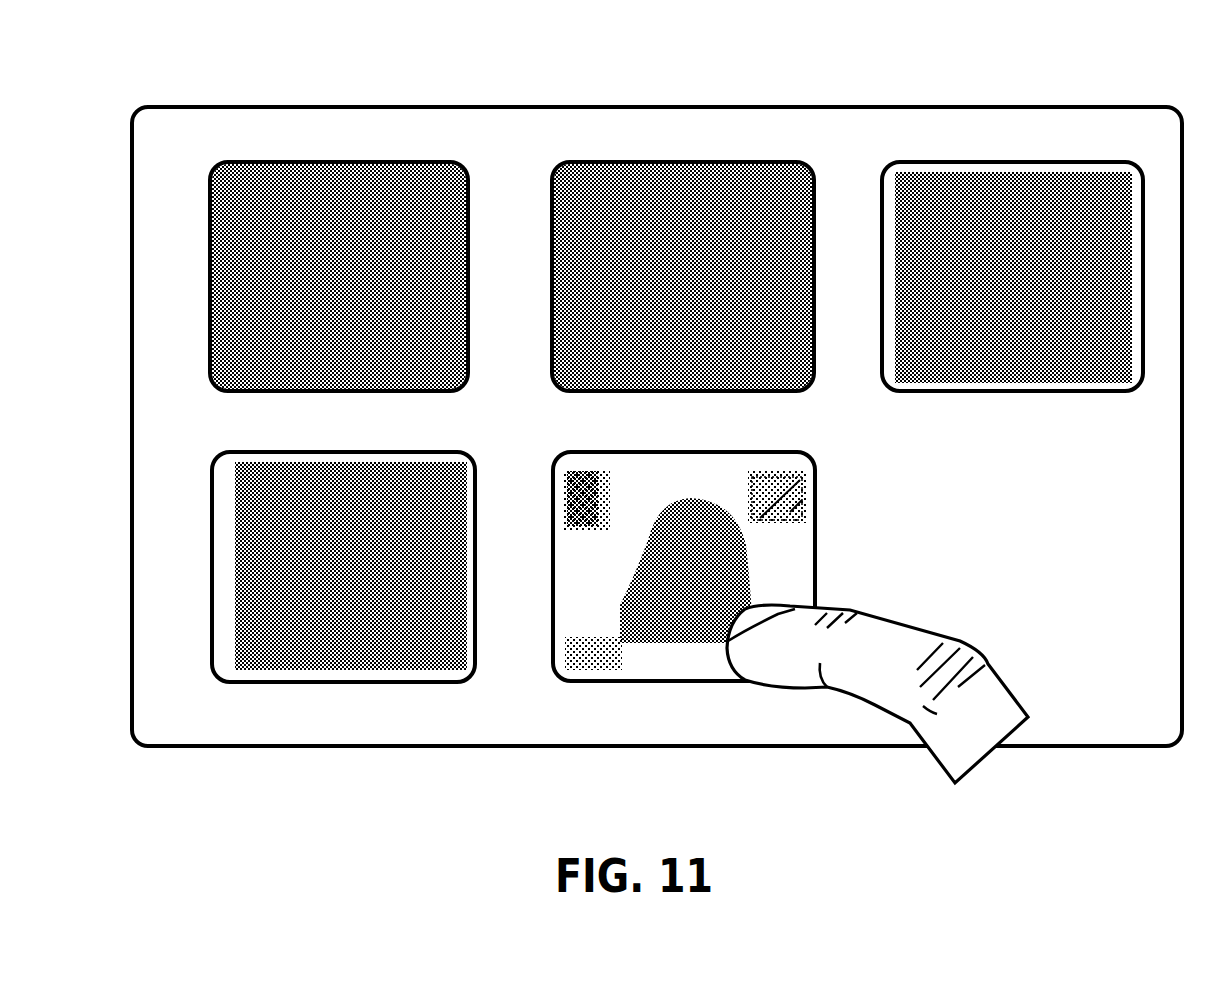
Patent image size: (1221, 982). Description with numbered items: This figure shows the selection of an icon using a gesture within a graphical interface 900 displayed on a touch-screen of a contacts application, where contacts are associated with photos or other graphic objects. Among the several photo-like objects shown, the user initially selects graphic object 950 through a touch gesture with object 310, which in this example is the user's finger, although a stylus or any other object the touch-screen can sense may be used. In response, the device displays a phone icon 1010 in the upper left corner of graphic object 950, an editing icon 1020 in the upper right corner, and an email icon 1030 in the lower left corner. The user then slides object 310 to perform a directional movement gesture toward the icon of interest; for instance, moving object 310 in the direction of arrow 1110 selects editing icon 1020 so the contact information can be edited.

The graphical interface 900 is at (1104, 84).
The graphic object 950 is at (838, 440).
The phone icon 1010 is at (563, 470).
The editing icon 1020 is at (797, 496).
The email icon 1030 is at (566, 679).
The arrow 1110 is at (752, 517).
The object 310 is at (963, 638).